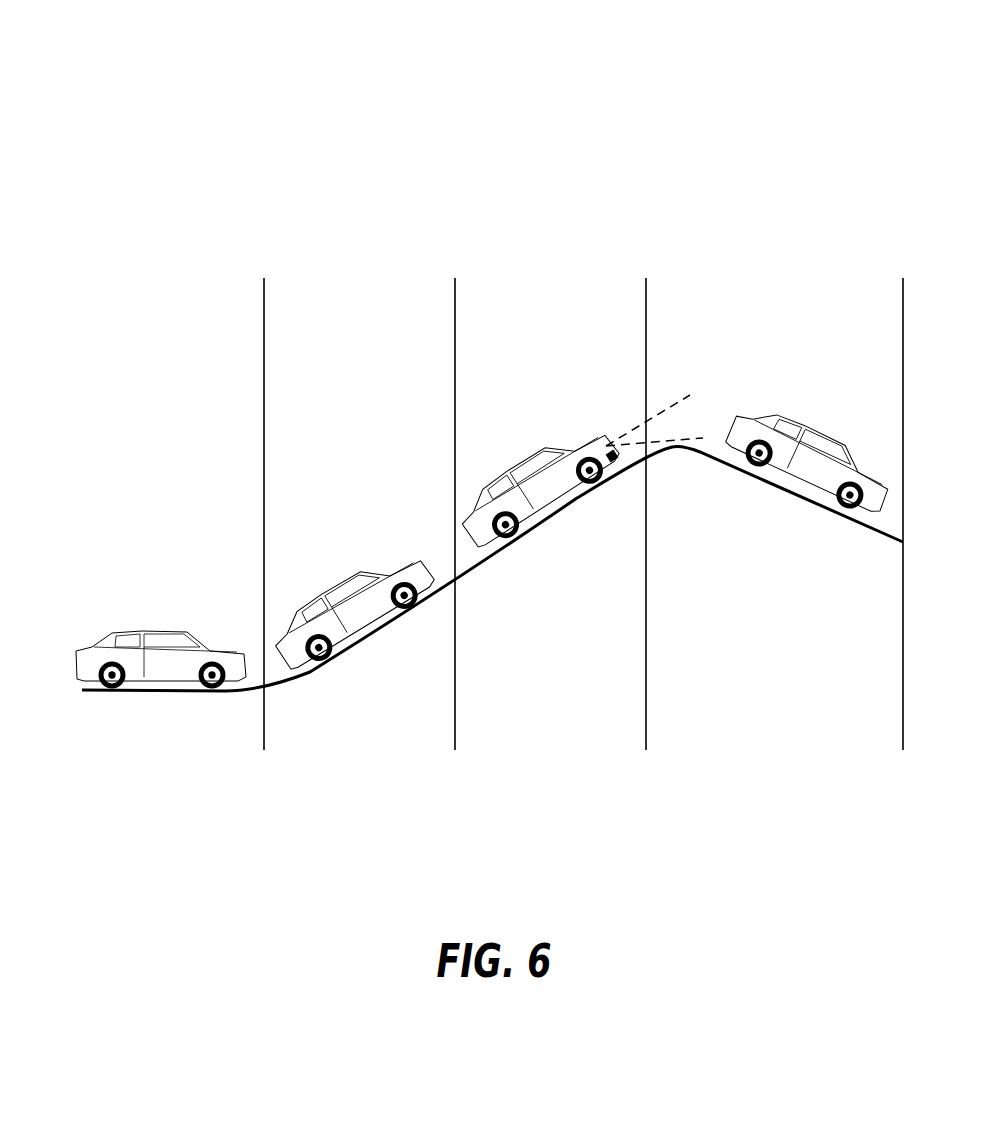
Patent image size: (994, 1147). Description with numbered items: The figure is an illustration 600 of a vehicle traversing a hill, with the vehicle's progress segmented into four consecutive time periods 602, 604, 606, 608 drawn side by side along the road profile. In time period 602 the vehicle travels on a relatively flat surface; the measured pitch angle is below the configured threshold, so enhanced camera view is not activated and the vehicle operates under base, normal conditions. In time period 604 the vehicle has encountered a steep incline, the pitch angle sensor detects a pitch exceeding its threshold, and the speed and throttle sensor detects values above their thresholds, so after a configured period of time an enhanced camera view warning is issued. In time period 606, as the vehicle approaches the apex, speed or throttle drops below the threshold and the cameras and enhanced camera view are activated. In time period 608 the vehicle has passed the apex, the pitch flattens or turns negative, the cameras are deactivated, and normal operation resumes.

The vehicle hill traversal illustration 600 is at (602, 93).
The first time period 602 is at (133, 268).
The second time period 604 is at (341, 268).
The third time period 606 is at (533, 268).
The fourth time period 608 is at (760, 268).